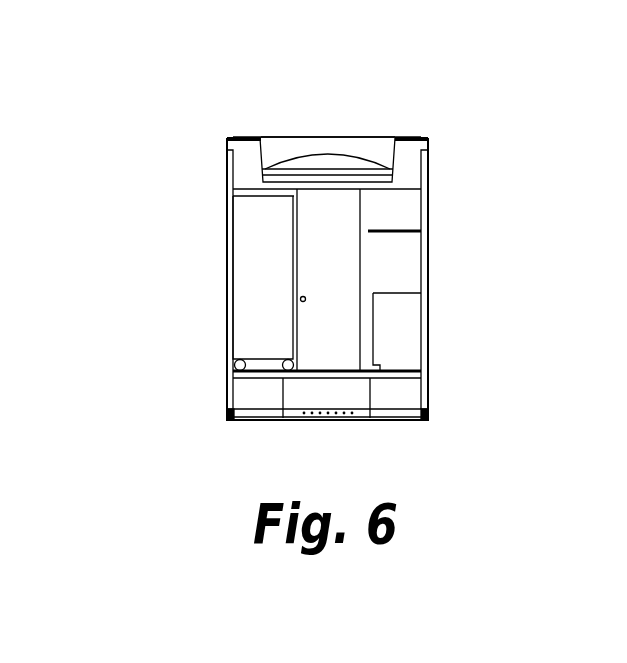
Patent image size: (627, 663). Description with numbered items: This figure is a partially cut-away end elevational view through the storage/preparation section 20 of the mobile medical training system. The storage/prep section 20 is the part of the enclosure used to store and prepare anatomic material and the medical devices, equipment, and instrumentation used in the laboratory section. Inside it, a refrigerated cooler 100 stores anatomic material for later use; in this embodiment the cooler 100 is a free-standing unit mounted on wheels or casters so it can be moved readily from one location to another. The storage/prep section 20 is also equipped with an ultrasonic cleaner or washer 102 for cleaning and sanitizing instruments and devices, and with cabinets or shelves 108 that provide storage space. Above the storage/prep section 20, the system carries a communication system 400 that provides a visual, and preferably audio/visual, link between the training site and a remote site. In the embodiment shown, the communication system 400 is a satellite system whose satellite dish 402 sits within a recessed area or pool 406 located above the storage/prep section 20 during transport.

The storage/preparation section 20 is at (172, 243).
The refrigerated cooler 100 is at (238, 298).
The ultrasonic cleaner 102 is at (403, 325).
The cabinets or shelves 108 is at (407, 232).
The communication system 400 is at (376, 122).
The satellite dish 402 is at (322, 137).
The recessed area or pool 406 is at (273, 137).